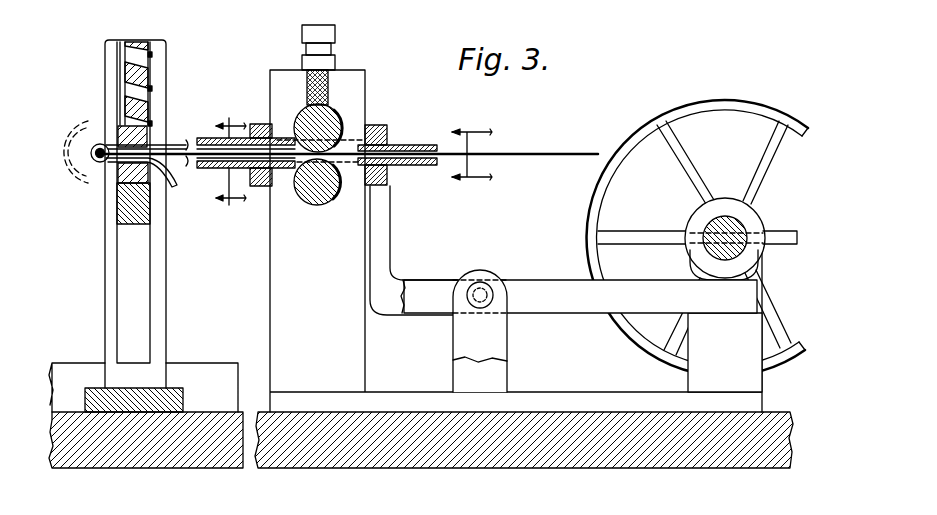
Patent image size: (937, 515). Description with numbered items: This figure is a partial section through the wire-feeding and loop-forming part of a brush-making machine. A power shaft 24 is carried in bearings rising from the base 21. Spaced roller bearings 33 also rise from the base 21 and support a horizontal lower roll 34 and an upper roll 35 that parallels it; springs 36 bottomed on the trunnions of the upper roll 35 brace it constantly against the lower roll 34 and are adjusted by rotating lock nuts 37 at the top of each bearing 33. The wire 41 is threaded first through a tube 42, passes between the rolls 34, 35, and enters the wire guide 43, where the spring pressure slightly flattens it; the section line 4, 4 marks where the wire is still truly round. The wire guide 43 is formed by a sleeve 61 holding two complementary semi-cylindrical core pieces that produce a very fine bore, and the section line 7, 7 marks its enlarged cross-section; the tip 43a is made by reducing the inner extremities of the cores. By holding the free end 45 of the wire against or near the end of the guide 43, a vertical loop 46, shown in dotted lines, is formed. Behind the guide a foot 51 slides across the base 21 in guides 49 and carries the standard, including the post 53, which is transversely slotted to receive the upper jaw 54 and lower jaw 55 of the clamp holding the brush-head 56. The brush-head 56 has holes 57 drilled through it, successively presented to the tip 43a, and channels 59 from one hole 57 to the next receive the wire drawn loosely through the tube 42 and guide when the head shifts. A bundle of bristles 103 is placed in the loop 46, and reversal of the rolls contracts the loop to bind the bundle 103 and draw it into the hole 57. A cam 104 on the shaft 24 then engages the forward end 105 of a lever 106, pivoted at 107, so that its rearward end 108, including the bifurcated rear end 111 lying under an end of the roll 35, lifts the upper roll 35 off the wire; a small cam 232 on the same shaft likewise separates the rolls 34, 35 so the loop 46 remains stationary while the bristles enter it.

The section line 4- 4 is at (472, 154).
The section line 7- 7 is at (231, 164).
The base 21 is at (101, 456).
The power shaft 24 is at (745, 236).
The roller bearing 33 is at (367, 92).
The lower roll 34 is at (330, 204).
The upper roll 35 is at (305, 110).
The spring 36 is at (328, 84).
The lock nut 37 is at (335, 40).
The wire 41 is at (541, 152).
The tube 42 is at (398, 147).
The wire guide 43 is at (203, 138).
The tip of wire guide 43a is at (163, 143).
The free end of wire 45 is at (177, 189).
The loop 46 is at (68, 122).
The guide 49 is at (68, 376).
The foot 51 is at (184, 399).
The post 53 is at (105, 262).
The upper jaw 54 is at (108, 40).
The lower jaw 55 is at (140, 226).
The brush-head 56 is at (138, 60).
The hole 57 is at (129, 52).
The channel 59 is at (153, 88).
The sleeve 61 is at (238, 176).
The bundle of bristles 103 is at (101, 165).
The cam 104 is at (735, 272).
The forward end of lever 105 is at (724, 302).
The lever 106 is at (537, 296).
The pivot 107 is at (481, 283).
The rearward end of lever 108 is at (383, 221).
The bifurcated rear end of lever 111 is at (348, 140).
The small cam 232 is at (724, 198).